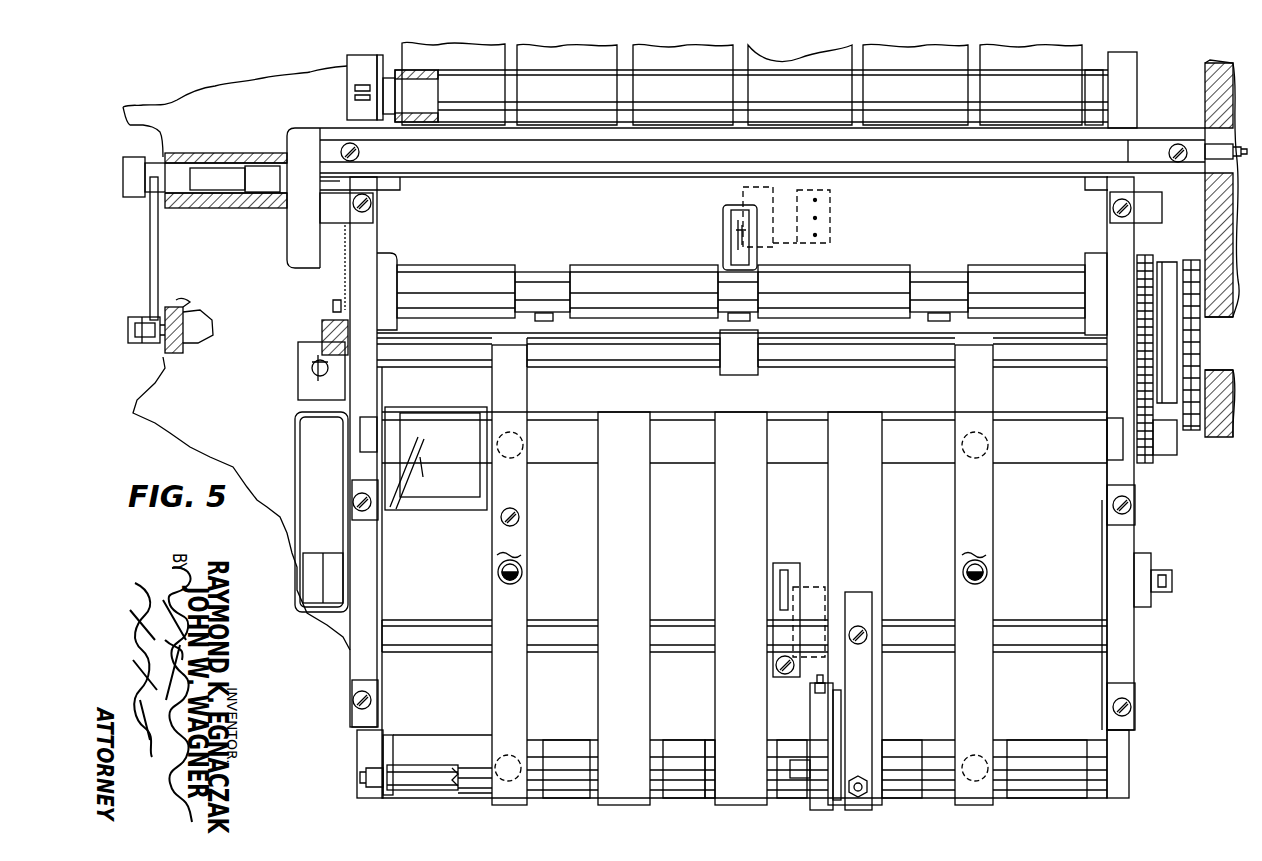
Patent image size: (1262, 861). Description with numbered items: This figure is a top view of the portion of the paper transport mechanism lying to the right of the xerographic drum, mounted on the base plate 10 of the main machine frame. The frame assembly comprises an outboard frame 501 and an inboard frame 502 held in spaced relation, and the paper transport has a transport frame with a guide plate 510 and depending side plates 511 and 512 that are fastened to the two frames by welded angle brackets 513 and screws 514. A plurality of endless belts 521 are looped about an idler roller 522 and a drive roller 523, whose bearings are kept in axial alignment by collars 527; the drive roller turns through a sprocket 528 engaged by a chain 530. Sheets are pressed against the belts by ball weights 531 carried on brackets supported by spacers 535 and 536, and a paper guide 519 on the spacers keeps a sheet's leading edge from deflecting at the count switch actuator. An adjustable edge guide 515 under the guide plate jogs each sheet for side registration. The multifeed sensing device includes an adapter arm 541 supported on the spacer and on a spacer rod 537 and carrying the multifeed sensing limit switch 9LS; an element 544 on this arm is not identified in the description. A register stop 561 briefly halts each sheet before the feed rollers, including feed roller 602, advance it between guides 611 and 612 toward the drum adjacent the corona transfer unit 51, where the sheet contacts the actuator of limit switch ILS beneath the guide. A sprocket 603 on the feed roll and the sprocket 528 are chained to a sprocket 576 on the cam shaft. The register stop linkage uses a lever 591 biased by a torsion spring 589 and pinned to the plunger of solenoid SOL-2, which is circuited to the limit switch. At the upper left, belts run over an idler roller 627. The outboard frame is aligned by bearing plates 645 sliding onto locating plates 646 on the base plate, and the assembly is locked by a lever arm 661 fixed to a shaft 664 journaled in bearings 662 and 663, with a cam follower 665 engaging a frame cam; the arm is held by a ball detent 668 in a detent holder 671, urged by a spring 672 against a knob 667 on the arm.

The base plate 10 is at (257, 88).
The corona transfer unit 51 is at (1147, 134).
The outboard frame 501 is at (350, 668).
The inboard frame 502 is at (1137, 652).
The guide plate 510 is at (709, 515).
The side plate 511 is at (368, 750).
The side plate 512 is at (1112, 800).
The angle brackets 513 is at (352, 484).
The screws 514 is at (354, 500).
The edge guide 515 is at (410, 470).
The paper guide 519 is at (805, 568).
The endless belts 521 is at (540, 798).
The idler roller 522 is at (676, 798).
The drive roller 523 is at (1122, 458).
The collars 527 is at (358, 434).
The sprocket 528 is at (1153, 450).
The chain 530 is at (1158, 342).
The ball weights 531 is at (524, 572).
The spacer 535 is at (608, 367).
The spacer 536 is at (420, 652).
The spacer rod 537 is at (428, 765).
The adapter arm 541 is at (868, 680).
The bracket screw 544 is at (868, 635).
The register stop 561 is at (540, 318).
The sprocket 576 is at (1140, 392).
The torsion spring 589 is at (324, 320).
The lever 591 is at (312, 368).
The feed roller 602 is at (638, 267).
The sprocket 603 is at (1157, 270).
The guide 611 is at (723, 226).
The guide 612 is at (885, 262).
The idler roller 627 is at (440, 80).
The bearing plates 645 is at (350, 508).
The locating plates 646 is at (335, 537).
The lever arm 661 is at (158, 257).
The bearing 662 is at (172, 198).
The bearing 663 is at (260, 187).
The shaft 664 is at (213, 172).
The cam follower 665 is at (320, 187).
The knob 667 is at (152, 344).
The ball detent 668 is at (180, 352).
The detent holder 671 is at (205, 322).
The spring 672 is at (190, 303).
The limit switch ILS is at (745, 200).
The multifeed sensing limit switch 9LS is at (808, 716).
The solenoid SOL-2 is at (300, 397).